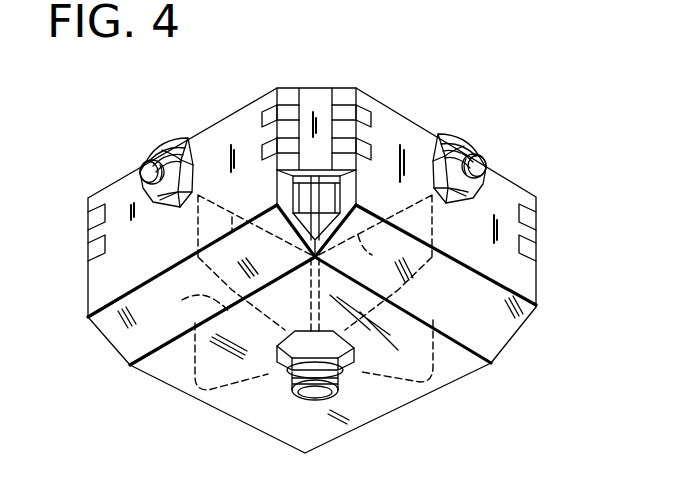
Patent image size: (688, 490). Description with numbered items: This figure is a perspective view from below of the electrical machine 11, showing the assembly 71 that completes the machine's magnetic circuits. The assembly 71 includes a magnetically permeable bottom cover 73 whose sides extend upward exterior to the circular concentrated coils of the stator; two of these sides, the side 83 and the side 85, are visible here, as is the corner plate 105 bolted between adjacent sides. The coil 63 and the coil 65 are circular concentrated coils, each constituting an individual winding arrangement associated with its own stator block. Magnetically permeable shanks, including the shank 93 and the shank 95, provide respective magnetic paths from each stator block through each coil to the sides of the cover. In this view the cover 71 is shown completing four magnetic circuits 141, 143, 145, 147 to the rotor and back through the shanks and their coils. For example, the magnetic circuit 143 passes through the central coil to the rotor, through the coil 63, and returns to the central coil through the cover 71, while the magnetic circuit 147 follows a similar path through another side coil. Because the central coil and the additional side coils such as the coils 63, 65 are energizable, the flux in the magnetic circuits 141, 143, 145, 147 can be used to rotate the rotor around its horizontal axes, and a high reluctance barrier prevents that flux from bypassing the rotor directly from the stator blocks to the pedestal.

The electrical machine 11 is at (613, 171).
The coil 63 is at (178, 141).
The coil 65 is at (462, 148).
The assembly 71 is at (490, 331).
The bottom cover 73 is at (318, 436).
The side 83 is at (228, 125).
The side 85 is at (407, 130).
The shank 93 is at (140, 172).
The shank 95 is at (476, 164).
The corner plate 105 is at (320, 97).
The magnetic circuit 141 is at (250, 402).
The magnetic circuit 143 is at (186, 286).
The magnetic circuit 145 is at (438, 292).
The magnetic circuit 147 is at (410, 310).